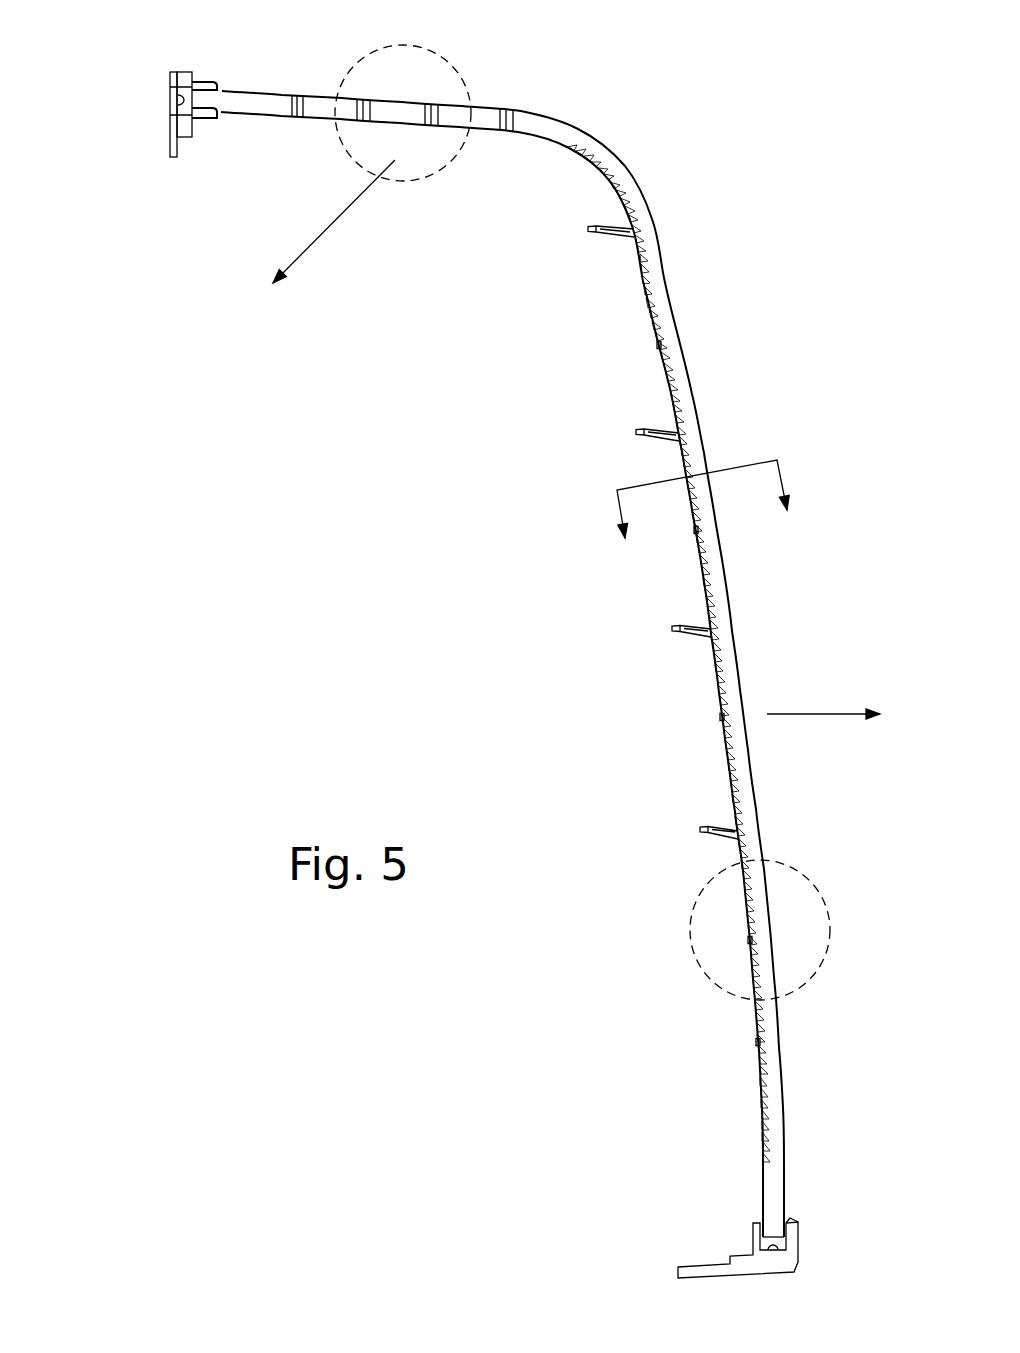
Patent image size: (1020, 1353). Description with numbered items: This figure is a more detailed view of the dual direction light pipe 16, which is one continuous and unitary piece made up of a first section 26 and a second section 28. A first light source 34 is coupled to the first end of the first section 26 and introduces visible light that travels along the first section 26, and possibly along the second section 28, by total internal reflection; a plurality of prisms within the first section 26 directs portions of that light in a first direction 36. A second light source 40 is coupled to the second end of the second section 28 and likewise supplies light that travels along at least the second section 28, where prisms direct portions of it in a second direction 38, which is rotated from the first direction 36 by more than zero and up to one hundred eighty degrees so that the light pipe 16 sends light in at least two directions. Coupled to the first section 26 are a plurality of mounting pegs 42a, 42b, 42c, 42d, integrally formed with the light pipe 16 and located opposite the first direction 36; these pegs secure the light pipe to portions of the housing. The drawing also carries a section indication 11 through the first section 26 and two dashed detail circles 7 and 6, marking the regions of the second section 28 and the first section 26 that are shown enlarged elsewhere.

The dual direction light pipe 16 is at (688, 373).
The second section 28 is at (492, 105).
The first section 26 is at (735, 628).
The second light source 40 is at (173, 80).
The first light source 34 is at (800, 1228).
The mounting peg 42a is at (590, 235).
The mounting peg 42b is at (637, 434).
The mounting peg 42c is at (673, 630).
The mounting peg 42d is at (701, 830).
The detail area of FIG. 7 is at (330, 138).
The detail area of FIG. 6 is at (690, 940).
The second direction 38 is at (332, 223).
The first direction 36 is at (795, 714).
The section line 11- 11 is at (722, 525).